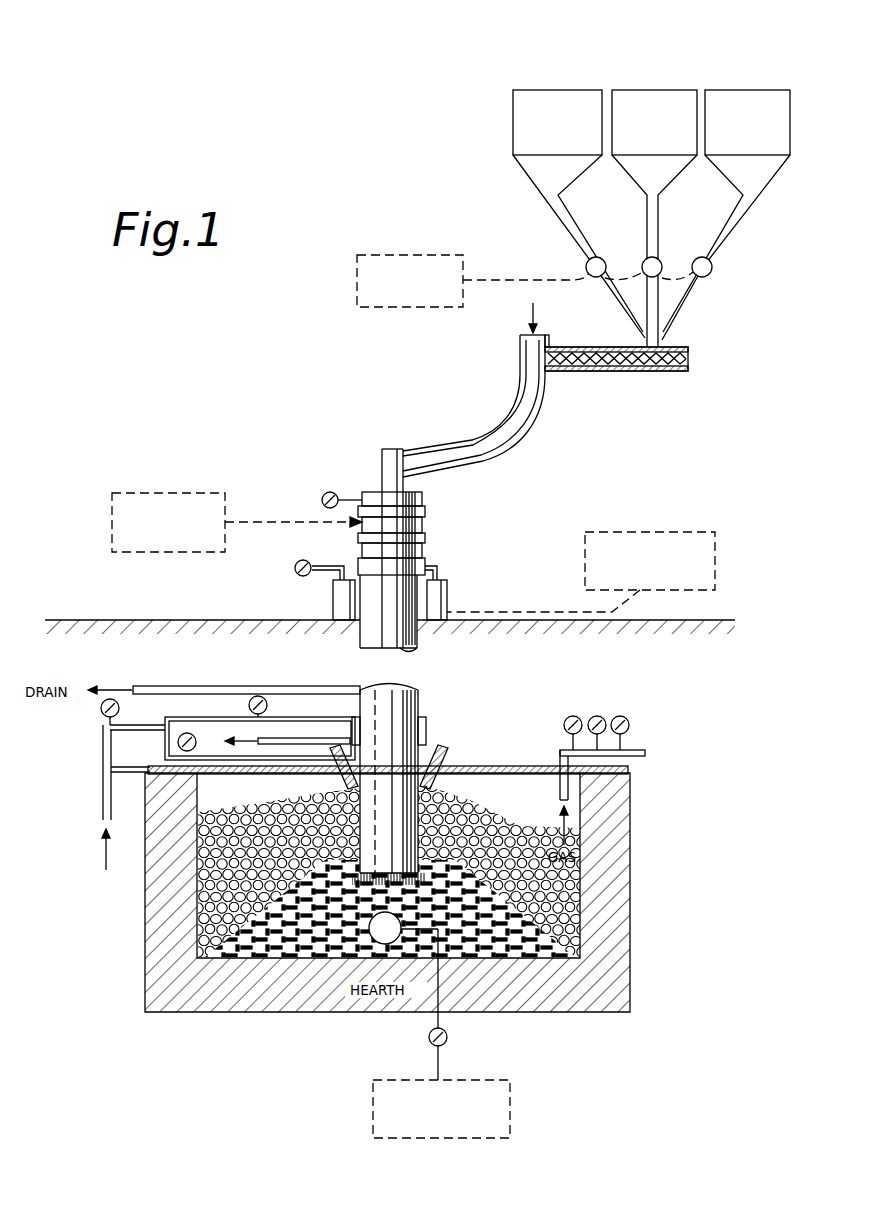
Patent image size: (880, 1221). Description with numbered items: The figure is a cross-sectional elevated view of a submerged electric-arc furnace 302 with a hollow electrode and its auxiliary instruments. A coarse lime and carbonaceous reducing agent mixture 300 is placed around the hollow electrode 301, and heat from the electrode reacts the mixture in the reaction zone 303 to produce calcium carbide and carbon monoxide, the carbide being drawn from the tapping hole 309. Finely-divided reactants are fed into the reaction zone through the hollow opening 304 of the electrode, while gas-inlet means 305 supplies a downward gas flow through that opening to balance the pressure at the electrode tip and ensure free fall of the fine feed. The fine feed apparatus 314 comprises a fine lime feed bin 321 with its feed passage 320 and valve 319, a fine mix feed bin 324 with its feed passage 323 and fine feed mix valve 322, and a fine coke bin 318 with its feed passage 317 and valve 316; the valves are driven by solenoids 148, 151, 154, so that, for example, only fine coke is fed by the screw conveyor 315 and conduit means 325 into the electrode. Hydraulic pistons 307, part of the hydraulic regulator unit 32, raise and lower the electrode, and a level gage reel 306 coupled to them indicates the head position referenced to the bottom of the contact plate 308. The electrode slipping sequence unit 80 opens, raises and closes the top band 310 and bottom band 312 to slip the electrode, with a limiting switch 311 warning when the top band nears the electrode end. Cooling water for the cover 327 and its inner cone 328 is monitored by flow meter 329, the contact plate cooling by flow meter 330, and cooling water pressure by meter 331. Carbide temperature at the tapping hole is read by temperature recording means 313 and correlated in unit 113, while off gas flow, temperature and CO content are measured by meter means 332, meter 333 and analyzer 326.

The fine lime feed bin 321 is at (548, 92).
The fine mix feed bin 324 is at (650, 92).
The fine coke bin 318 is at (736, 92).
The fine feed apparatus 314 is at (601, 251).
The feed passage 320 is at (567, 228).
The valve 319 is at (597, 256).
The feed passage 323 is at (658, 236).
The fine feed mix valve 322 is at (645, 259).
The feed passage 317 is at (722, 233).
The valve 316 is at (709, 274).
The solenoid 148 is at (509, 265).
The solenoid 151 is at (509, 265).
The solenoid 154 is at (466, 240).
The gas-inlet means 305 is at (520, 337).
The screw conveyor 315 is at (638, 372).
The conduit means 325 is at (524, 432).
The electrode slipping sequence unit 80 is at (162, 493).
The limiting switch 311 is at (322, 500).
The hollow opening 304 is at (425, 500).
The top band 310 is at (425, 512).
The hollow electrode 301 is at (425, 537).
The bottom band 312 is at (425, 557).
The level gage reel 306 is at (295, 568).
The hydraulic pistons 307 is at (447, 606).
The hydraulic regulator unit 32 is at (647, 532).
The contact plate 308 is at (358, 732).
The meter 331 is at (101, 712).
The flow meter 330 is at (249, 706).
The inner cone 328 is at (260, 727).
The flow meter 329 is at (178, 744).
The meter means 332 is at (563, 726).
The meter 333 is at (598, 716).
The analyzer 326 is at (630, 727).
The cover 327 is at (622, 773).
The submerged electric-arc furnace 302 is at (645, 899).
The coarse lime and carbonaceous reducing agent mixture 300 is at (203, 926).
The reaction zone 303 is at (330, 935).
The tapping hole 309 is at (378, 938).
The temperature recording means 313 is at (447, 1039).
The unit 113 is at (373, 1110).